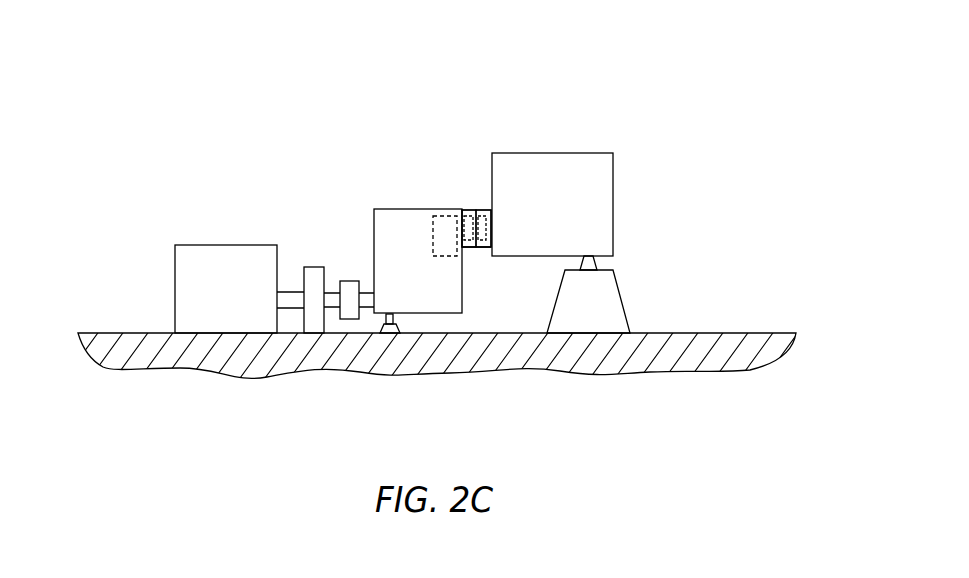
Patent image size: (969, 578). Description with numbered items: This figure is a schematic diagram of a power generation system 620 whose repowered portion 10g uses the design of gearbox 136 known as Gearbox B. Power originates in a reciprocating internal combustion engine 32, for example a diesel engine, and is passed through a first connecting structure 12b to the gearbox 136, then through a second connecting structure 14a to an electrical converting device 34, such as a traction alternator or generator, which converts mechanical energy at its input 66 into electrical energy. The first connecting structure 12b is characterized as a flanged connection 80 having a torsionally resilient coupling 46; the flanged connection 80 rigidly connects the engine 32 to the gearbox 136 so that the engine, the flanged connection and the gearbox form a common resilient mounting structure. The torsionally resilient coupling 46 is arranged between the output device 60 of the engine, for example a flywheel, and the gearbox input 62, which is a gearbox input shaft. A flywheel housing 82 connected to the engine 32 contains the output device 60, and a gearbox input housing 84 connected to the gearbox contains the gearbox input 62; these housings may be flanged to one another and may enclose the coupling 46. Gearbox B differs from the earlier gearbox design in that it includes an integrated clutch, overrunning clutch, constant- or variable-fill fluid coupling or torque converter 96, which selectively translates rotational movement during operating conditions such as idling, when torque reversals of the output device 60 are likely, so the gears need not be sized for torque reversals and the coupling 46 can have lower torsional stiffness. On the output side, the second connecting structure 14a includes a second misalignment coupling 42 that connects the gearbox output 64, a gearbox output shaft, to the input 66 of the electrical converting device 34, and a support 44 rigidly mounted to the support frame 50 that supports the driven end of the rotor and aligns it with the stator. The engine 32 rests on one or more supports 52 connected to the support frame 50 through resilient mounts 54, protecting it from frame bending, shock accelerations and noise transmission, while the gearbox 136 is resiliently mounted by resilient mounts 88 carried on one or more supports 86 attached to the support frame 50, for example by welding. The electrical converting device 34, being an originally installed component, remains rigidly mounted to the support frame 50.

The repowered portion 10g is at (612, 68).
The second connecting structure 14a is at (375, 108).
The first connecting structure 12b is at (490, 106).
The power generation system 620 is at (683, 88).
The electrical converting device 34 is at (212, 255).
The input 66 is at (293, 290).
The support 44 is at (313, 270).
The second misalignment coupling 42 is at (350, 286).
The gearbox output 64 is at (369, 292).
The gearbox 136 is at (393, 216).
The clutch, overrunning clutch, fluid coupling or torque converter 96 is at (438, 243).
The gearbox input housing 84 is at (467, 210).
The torsionally resilient coupling 46 is at (472, 210).
The flanged connection 80 is at (476, 146).
The flywheel housing 82 is at (481, 210).
The reciprocating internal combustion engine 32 is at (600, 173).
The resilient mount 54 is at (593, 267).
The output device 60 is at (469, 247).
The gearbox input 62 is at (465, 248).
The support frame 50 is at (95, 333).
The support 86 is at (391, 333).
The resilient mount 88 is at (395, 320).
The support 52 is at (585, 330).